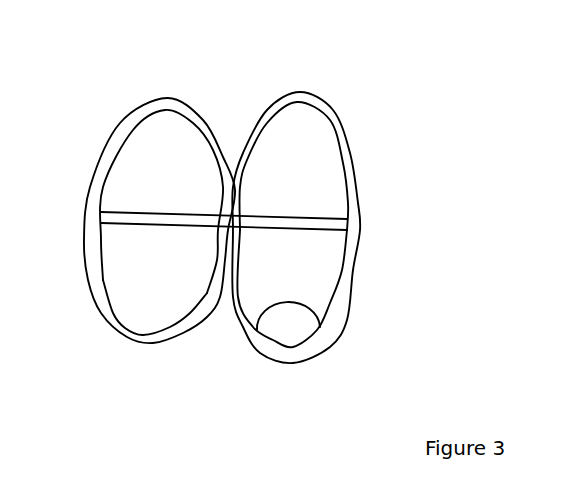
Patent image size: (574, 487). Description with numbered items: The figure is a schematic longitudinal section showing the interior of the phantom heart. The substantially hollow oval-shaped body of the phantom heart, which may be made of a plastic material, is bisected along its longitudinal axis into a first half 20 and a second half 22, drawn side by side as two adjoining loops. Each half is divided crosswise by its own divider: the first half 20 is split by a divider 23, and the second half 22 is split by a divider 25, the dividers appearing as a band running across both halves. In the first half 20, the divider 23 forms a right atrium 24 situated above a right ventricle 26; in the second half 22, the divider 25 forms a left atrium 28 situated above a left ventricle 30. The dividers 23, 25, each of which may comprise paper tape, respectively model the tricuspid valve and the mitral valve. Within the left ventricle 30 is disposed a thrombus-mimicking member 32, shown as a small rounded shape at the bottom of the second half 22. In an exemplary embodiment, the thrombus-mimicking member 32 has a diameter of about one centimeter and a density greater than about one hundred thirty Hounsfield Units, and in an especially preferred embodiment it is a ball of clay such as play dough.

The first half 20 is at (203, 72).
The second half 22 is at (367, 105).
The divider 23 is at (127, 218).
The right atrium 24 is at (137, 150).
The divider 25 is at (320, 223).
The right ventricle 26 is at (157, 315).
The left atrium 28 is at (323, 160).
The left ventricle 30 is at (318, 272).
The thrombus-mimicking member 32 is at (297, 333).